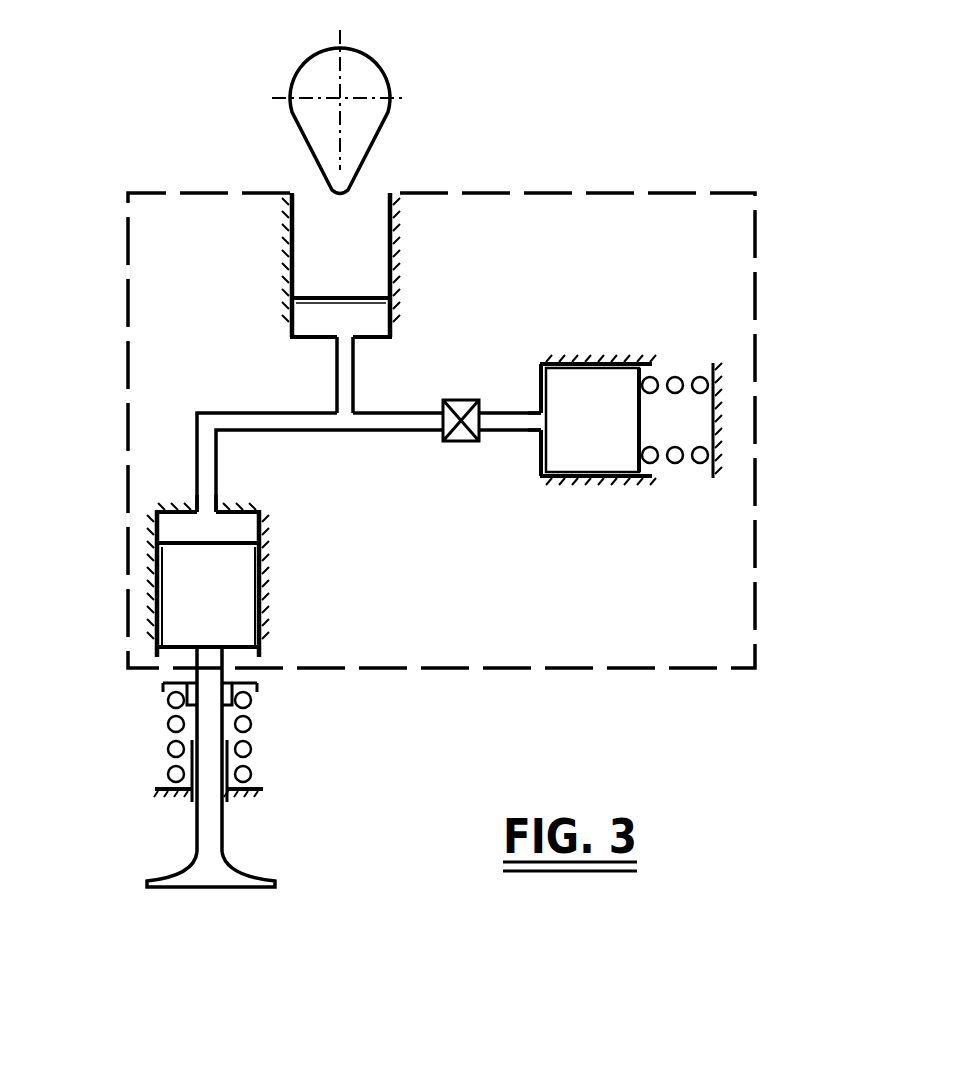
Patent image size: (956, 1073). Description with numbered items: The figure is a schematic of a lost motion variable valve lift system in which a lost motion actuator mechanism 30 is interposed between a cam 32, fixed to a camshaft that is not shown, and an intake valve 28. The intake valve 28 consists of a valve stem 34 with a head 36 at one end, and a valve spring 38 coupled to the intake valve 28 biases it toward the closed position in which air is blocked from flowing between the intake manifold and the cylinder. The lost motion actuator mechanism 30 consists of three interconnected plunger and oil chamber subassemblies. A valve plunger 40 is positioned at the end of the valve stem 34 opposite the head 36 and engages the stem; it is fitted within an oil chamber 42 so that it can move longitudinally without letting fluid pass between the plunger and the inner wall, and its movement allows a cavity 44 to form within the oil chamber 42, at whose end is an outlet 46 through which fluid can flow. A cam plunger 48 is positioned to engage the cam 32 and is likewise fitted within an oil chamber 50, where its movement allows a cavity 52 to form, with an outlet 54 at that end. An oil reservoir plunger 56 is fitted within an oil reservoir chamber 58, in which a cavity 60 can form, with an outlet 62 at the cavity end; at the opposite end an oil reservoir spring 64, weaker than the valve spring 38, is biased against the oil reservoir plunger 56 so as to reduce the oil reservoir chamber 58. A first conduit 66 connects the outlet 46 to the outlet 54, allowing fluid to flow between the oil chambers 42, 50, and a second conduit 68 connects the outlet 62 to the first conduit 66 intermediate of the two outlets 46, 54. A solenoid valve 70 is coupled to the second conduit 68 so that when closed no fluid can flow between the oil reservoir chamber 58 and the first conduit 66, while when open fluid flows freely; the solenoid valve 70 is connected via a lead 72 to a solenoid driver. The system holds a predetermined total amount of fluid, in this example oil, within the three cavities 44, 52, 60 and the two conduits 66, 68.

The intake valve 28 is at (227, 830).
The lost motion actuator mechanism 30 is at (757, 283).
The cam 32 is at (390, 66).
The valve stem 34 is at (195, 813).
The head 36 is at (217, 887).
The valve spring 38 is at (253, 726).
The valve plunger 40 is at (173, 653).
The oil chamber 42 is at (263, 523).
The cavity 44 is at (178, 522).
The outlet 46 is at (207, 508).
The cam plunger 48 is at (373, 190).
The oil chamber 50 is at (372, 340).
The cavity 52 is at (313, 313).
The outlet 54 is at (345, 337).
The oil reservoir plunger 56 is at (642, 408).
The oil reservoir chamber 58 is at (538, 375).
The cavity 60 is at (540, 462).
The outlet 62 is at (537, 420).
The oil reservoir spring 64 is at (677, 463).
The first conduit 66 is at (237, 412).
The second conduit 68 is at (410, 432).
The solenoid valve 70 is at (460, 403).
The lead 72 is at (337, 428).